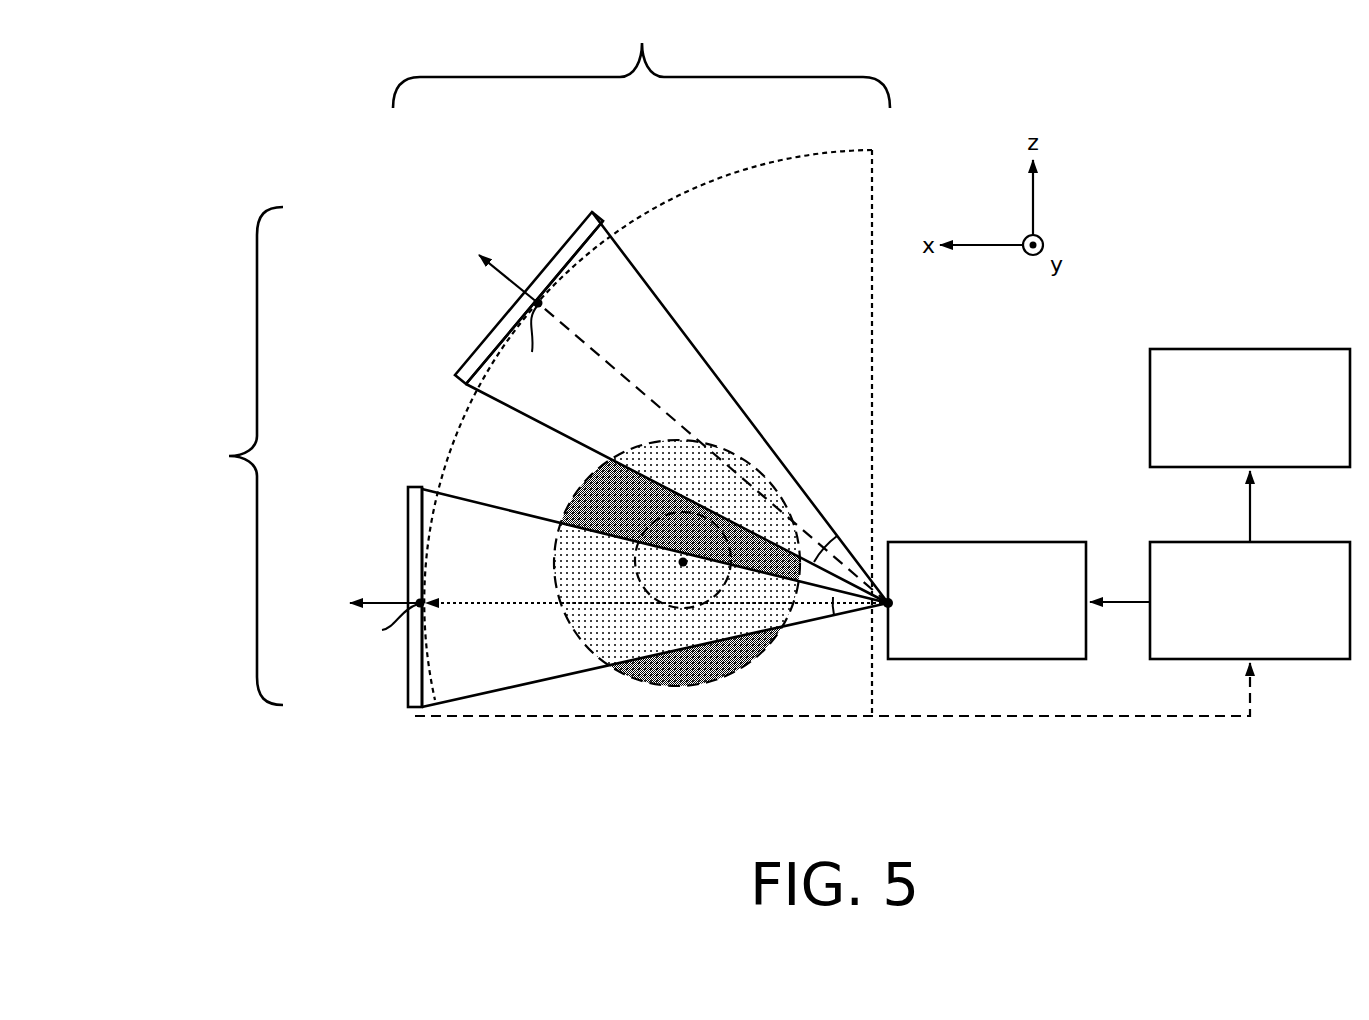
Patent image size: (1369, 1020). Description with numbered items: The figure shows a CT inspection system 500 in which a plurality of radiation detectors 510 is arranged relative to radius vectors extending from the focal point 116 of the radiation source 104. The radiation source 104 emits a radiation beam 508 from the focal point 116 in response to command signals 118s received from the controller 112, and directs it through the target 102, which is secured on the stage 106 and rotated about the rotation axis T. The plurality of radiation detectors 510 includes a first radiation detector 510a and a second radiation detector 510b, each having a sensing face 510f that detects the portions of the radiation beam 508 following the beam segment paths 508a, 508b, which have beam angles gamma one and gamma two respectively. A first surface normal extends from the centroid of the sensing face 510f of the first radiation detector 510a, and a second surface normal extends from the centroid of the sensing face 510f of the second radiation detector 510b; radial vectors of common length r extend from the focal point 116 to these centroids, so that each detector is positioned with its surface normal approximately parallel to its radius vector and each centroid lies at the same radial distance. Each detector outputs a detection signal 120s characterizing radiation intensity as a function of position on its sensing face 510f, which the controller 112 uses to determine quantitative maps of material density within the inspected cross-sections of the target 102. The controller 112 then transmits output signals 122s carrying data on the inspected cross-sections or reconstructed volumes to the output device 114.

The CT inspection system 500 is at (1180, 160).
The radiation beam 508 is at (641, 61).
The first beam segment path 508a is at (621, 425).
The second beam segment path 508b is at (521, 659).
The plurality of radiation detectors 510 is at (230, 456).
The first radiation detector 510a is at (455, 372).
The second radiation detector 510b is at (410, 505).
The sensing face 510f is at (600, 226).
The target 102 is at (757, 653).
The stage 106 is at (647, 532).
The radiation source 104 is at (968, 614).
The controller 112 is at (1231, 614).
The output device 114 is at (1231, 421).
The focal point 116 is at (890, 603).
The command signals 118s is at (1113, 598).
The detection signal 120s is at (897, 720).
The output signals 122s is at (1252, 515).